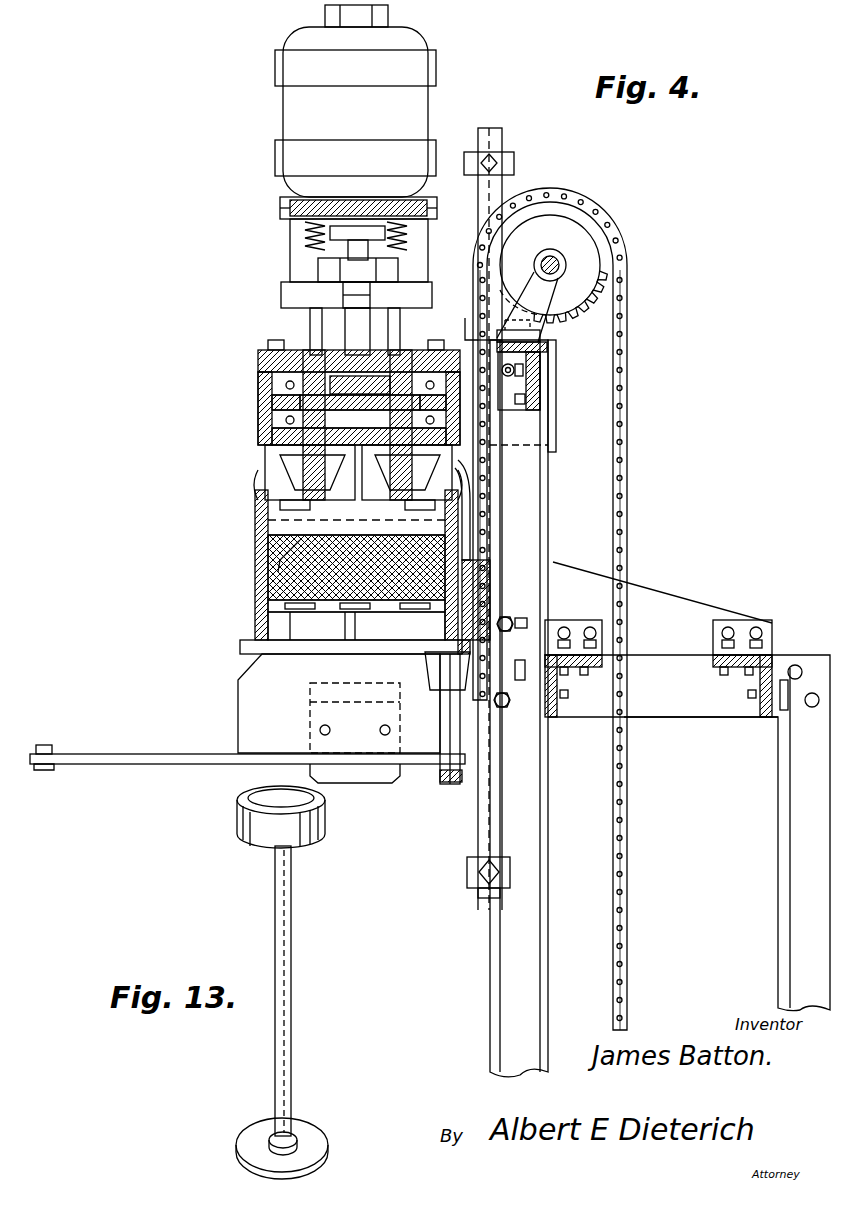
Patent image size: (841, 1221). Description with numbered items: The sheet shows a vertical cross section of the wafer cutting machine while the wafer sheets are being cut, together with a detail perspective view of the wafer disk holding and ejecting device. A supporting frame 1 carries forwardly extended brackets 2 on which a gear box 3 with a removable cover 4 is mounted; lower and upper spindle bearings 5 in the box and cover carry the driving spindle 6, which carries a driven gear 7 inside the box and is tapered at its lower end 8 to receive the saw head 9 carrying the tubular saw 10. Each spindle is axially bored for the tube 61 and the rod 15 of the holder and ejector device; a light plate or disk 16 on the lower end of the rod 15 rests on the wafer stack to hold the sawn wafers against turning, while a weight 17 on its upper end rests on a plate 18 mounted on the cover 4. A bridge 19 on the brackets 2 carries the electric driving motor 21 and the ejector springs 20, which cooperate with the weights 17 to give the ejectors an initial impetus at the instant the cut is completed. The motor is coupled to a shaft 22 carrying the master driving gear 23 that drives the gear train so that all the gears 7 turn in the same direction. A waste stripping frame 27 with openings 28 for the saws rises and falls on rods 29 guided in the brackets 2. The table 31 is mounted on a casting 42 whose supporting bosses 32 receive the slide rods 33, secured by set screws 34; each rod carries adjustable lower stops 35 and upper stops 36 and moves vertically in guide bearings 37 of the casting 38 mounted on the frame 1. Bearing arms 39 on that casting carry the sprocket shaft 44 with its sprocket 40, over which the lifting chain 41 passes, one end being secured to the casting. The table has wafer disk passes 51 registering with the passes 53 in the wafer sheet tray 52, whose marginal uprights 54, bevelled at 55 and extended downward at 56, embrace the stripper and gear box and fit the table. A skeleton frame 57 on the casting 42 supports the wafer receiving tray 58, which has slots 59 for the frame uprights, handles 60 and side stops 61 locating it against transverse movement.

In FIG. 4, the supporting frame 1 is at (548, 522).
In FIG. 4, the brackets 2 is at (556, 440).
In FIG. 4, the gear box 3 is at (272, 400).
In FIG. 4, the removable cover 4 is at (262, 362).
In FIG. 4, the spindle bearings 5 is at (272, 440).
In FIG. 4, the driving spindle 6 is at (290, 424).
In FIG. 4, the driven gears 7 is at (290, 390).
In FIG. 4, the tapered lower end 8 is at (303, 466).
In FIG. 4, the saw head 9 is at (465, 475).
In FIG. 4, the tubular saw 10 is at (262, 490).
In FIG. 4, the rod 15 is at (308, 324).
In FIG. 13, the rod 15 is at (288, 1036).
In FIG. 4, the plate or disk 16 is at (268, 580).
In FIG. 13, the plate or disk 16 is at (318, 1138).
In FIG. 4, the weight 17 is at (282, 300).
In FIG. 13, the weight 17 is at (272, 838).
In FIG. 4, the plate 18 is at (268, 345).
In FIG. 4, the bridge 19 is at (285, 209).
In FIG. 4, the ejector springs 20 is at (303, 230).
In FIG. 4, the driving motor 21 is at (290, 108).
In FIG. 4, the shaft 22 is at (360, 348).
In FIG. 4, the master driving gear 23 is at (262, 388).
In FIG. 4, the waste stripping frame 27 is at (255, 522).
In FIG. 4, the openings 28 is at (256, 560).
In FIG. 4, the rods 29 is at (470, 462).
In FIG. 4, the table 31 is at (258, 648).
In FIG. 4, the supporting bosses 32 is at (465, 675).
In FIG. 4, the slide rods 33 is at (480, 812).
In FIG. 4, the set screws 34 is at (550, 630).
In FIG. 4, the lower stops 35 is at (468, 875).
In FIG. 4, the upper stops 36 is at (508, 160).
In FIG. 4, the guide bearings 37 is at (470, 325).
In FIG. 4, the casting 38 is at (540, 393).
In FIG. 4, the bearing arms 39 is at (535, 295).
In FIG. 4, the sprocket 40 is at (585, 256).
In FIG. 4, the lifting chain 41 is at (622, 538).
In FIG. 4, the casting 42 is at (520, 636).
In FIG. 4, the sprocket shaft 44 is at (555, 255).
In FIG. 4, the wafer disk passes 51 is at (350, 645).
In FIG. 4, the wafer sheet tray 52 is at (268, 606).
In FIG. 4, the passes 53 is at (292, 645).
In FIG. 4, the uprights 54 is at (256, 535).
In FIG. 4, the bevelled faces 55 is at (490, 498).
In FIG. 4, the downward extensions 56 is at (256, 625).
In FIG. 4, the skeleton frame 57 is at (445, 775).
In FIG. 4, the wafer receiving tray 58 is at (246, 718).
In FIG. 4, the slots 59 is at (150, 765).
In FIG. 4, the handles 60 is at (322, 712).
In FIG. 4, the side stops 61 is at (355, 785).